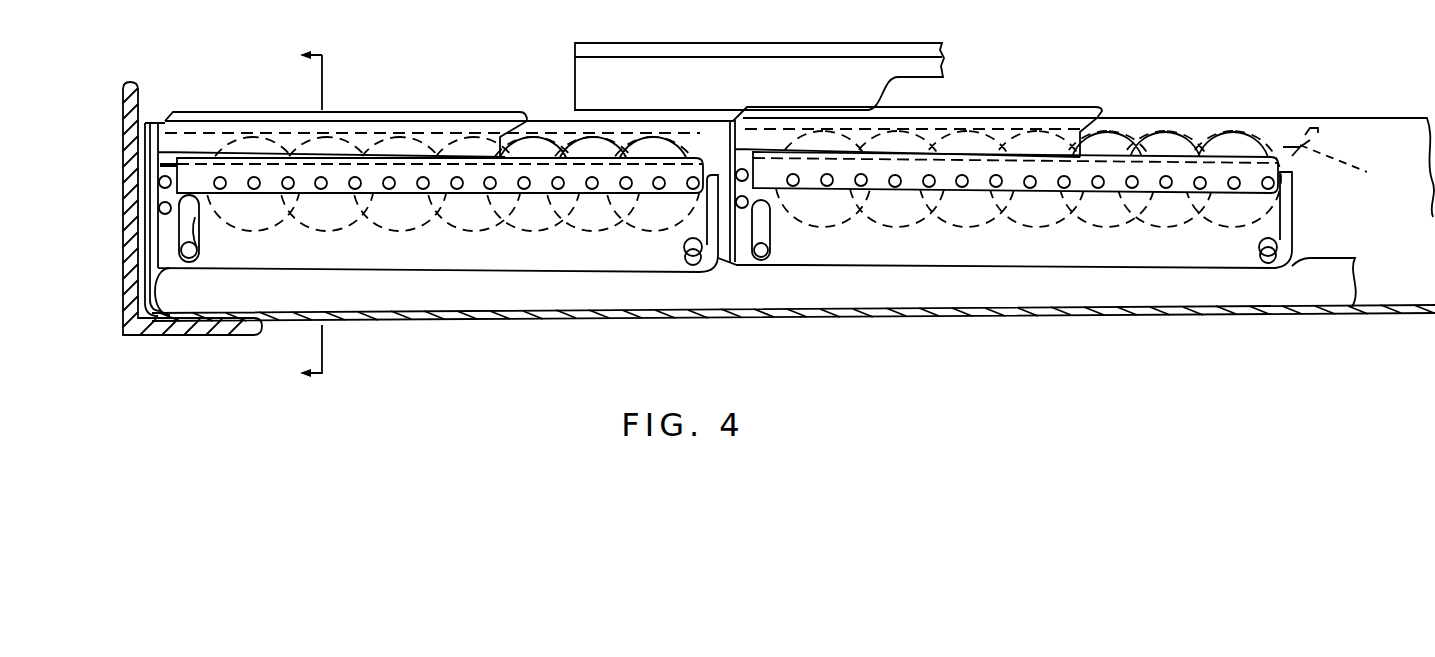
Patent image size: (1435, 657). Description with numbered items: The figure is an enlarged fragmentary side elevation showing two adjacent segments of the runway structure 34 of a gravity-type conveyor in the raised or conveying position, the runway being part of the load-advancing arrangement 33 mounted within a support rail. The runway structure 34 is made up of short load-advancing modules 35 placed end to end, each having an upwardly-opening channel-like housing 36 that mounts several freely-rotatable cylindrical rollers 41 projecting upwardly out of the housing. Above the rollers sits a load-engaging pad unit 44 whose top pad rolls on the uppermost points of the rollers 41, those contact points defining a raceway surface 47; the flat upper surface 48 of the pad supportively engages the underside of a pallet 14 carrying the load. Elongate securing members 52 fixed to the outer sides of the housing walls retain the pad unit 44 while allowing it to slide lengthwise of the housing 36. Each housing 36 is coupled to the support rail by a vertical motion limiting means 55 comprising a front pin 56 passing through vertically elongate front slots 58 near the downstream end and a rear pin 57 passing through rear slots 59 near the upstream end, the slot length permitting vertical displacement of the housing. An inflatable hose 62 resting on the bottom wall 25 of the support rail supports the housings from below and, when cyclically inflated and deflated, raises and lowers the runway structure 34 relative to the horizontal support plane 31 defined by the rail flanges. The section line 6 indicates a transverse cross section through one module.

The section line 6- 6 is at (315, 217).
The pallet 14 is at (741, 67).
The bottom wall 25 is at (945, 313).
The horizontal support plane 31 is at (1350, 117).
The load-advancing arrangement 33 is at (1220, 78).
The runway structure 34 is at (190, 103).
The load-advancing module 35 is at (500, 99).
The housing 36 is at (538, 263).
The rollers 41 is at (368, 207).
The load-engaging pad unit 44 is at (433, 127).
The raceway surface 47 is at (670, 137).
The upper surface 48 is at (360, 112).
The securing members 52 is at (318, 191).
The vertical motion limiting means 55 is at (714, 296).
The front pin 56 is at (690, 264).
The rear pin 57 is at (192, 259).
The front slots 58 is at (684, 247).
The rear slots 59 is at (200, 226).
The inflatable hose 62 is at (447, 295).